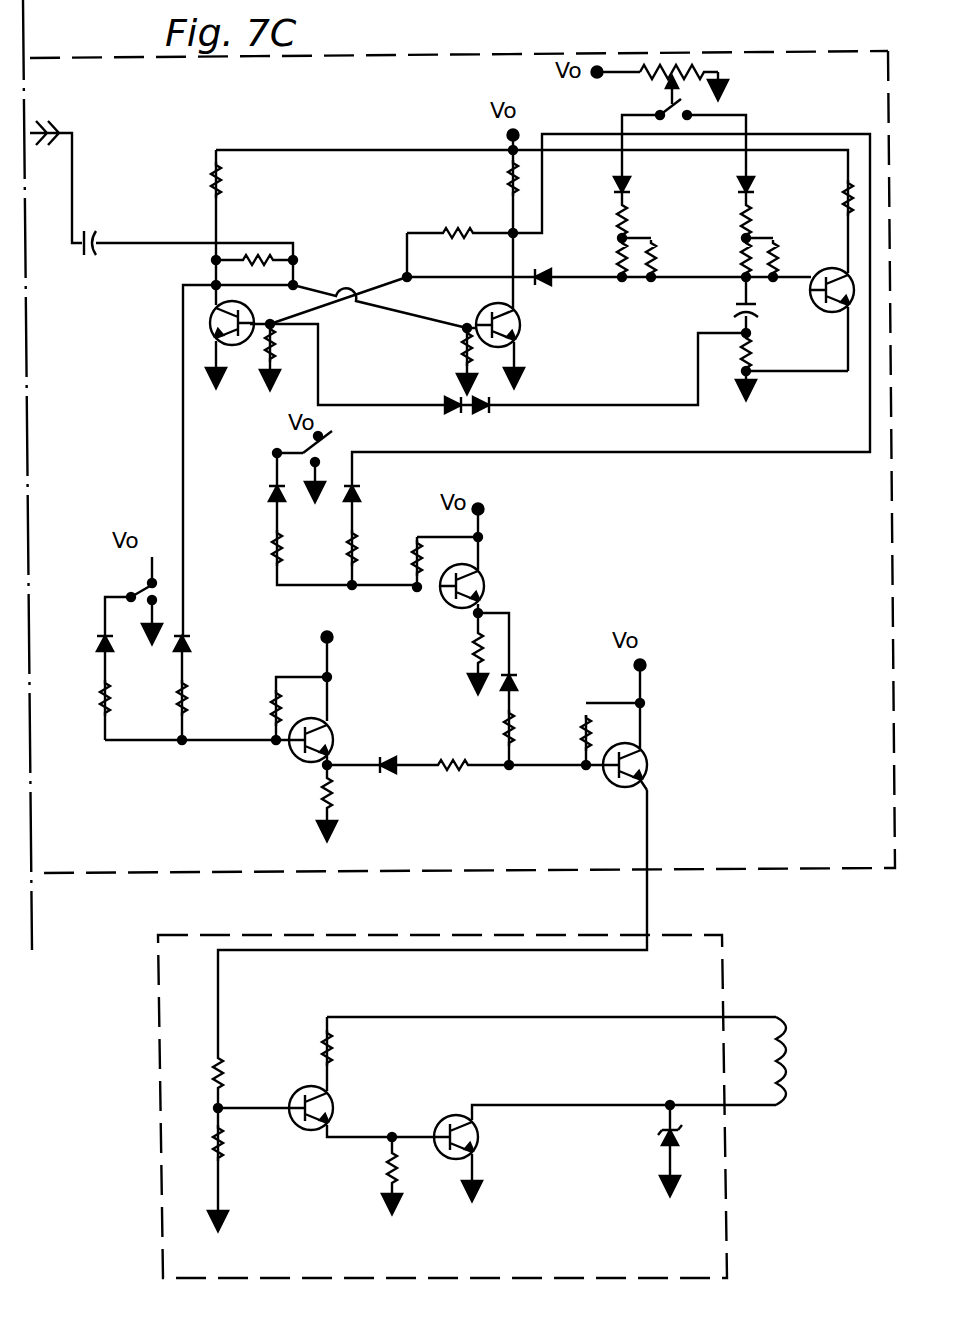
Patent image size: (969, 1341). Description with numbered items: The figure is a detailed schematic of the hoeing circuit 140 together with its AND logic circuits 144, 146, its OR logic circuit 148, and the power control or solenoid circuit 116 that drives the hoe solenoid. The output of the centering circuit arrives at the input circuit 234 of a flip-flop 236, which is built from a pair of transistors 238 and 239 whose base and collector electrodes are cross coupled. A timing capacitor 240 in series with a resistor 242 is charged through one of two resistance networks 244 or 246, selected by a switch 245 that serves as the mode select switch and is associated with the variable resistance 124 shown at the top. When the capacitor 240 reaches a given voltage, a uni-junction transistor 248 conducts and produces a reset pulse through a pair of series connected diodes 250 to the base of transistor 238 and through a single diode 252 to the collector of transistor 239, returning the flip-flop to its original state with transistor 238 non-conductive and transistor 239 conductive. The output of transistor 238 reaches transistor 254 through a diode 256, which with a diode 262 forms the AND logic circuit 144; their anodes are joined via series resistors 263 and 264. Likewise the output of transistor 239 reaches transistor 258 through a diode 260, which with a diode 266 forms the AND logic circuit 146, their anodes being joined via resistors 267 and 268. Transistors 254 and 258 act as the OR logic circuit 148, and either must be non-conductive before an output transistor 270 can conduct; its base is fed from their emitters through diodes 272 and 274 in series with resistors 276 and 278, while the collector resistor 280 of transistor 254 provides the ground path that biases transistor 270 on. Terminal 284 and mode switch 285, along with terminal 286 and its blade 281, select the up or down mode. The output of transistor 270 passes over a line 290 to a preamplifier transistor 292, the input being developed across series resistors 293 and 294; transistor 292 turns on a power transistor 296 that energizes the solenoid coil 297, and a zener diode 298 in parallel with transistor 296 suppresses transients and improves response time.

The solenoid circuit 116 is at (727, 975).
The potentiometer 124 is at (672, 76).
The hoeing circuit 140 is at (683, 492).
The AND logic circuit 144 is at (196, 610).
The AND logic circuit 146 is at (348, 452).
The OR logic circuit 148 is at (528, 782).
The input circuit 234 is at (200, 272).
The flip-flop 236 is at (320, 280).
The transistor 238 is at (207, 323).
The transistor 239 is at (523, 326).
The timing capacitor 240 is at (738, 312).
The resistor 242 is at (758, 350).
The resistance network 244 is at (640, 214).
The switch 245 is at (658, 100).
The resistance network 246 is at (757, 218).
The uni-junction transistor 248 is at (829, 270).
The series connected diodes 250 is at (466, 414).
The diode 252 is at (598, 254).
The transistor 254 is at (335, 729).
The diode 256 is at (192, 644).
The transistor 258 is at (483, 590).
The diode 260 is at (362, 497).
The diode 262 is at (98, 642).
The series resistor 263 is at (188, 705).
The series resistor 264 is at (98, 693).
The diode 266 is at (268, 497).
The resistor 267 is at (355, 544).
The resistor 268 is at (268, 555).
The output transistor 270 is at (650, 753).
The diode 272 is at (392, 776).
The diode 274 is at (518, 680).
The resistor 276 is at (456, 770).
The resistor 278 is at (502, 725).
The resistor 280 is at (322, 790).
The switch blade 281 is at (340, 424).
The terminal 284 is at (116, 594).
The mode switch 285 is at (160, 590).
The terminal 286 is at (274, 451).
The line 290 is at (648, 816).
The transistor 292 is at (336, 1106).
The series resistor 293 is at (226, 1078).
The series resistor 294 is at (222, 1138).
The power transistor 296 is at (449, 1116).
The solenoid coil 297 is at (780, 1086).
The zener diode 298 is at (660, 1138).